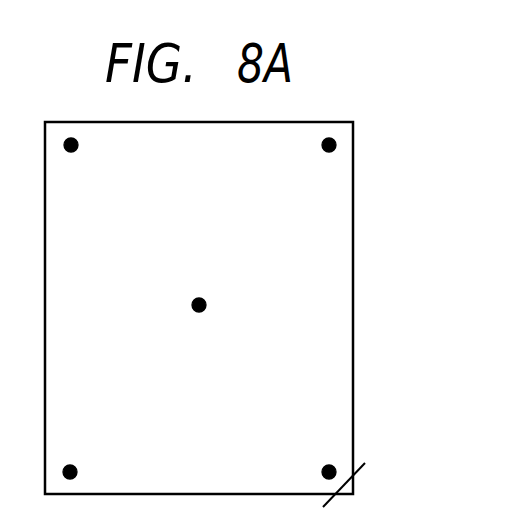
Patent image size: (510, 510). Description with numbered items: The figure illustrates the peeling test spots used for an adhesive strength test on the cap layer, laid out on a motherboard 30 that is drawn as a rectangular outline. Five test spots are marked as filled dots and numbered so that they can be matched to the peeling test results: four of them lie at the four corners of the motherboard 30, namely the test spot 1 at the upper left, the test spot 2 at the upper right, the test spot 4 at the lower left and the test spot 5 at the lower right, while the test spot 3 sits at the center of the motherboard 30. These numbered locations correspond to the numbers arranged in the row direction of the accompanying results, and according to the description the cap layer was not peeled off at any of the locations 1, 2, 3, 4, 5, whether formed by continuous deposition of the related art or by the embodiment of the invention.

The motherboard 30 is at (353, 329).
The peeling test spot 1 is at (77, 162).
The peeling test spot 2 is at (320, 162).
The peeling test spot 3 is at (200, 323).
The peeling test spot 4 is at (77, 452).
The peeling test spot 5 is at (320, 452).